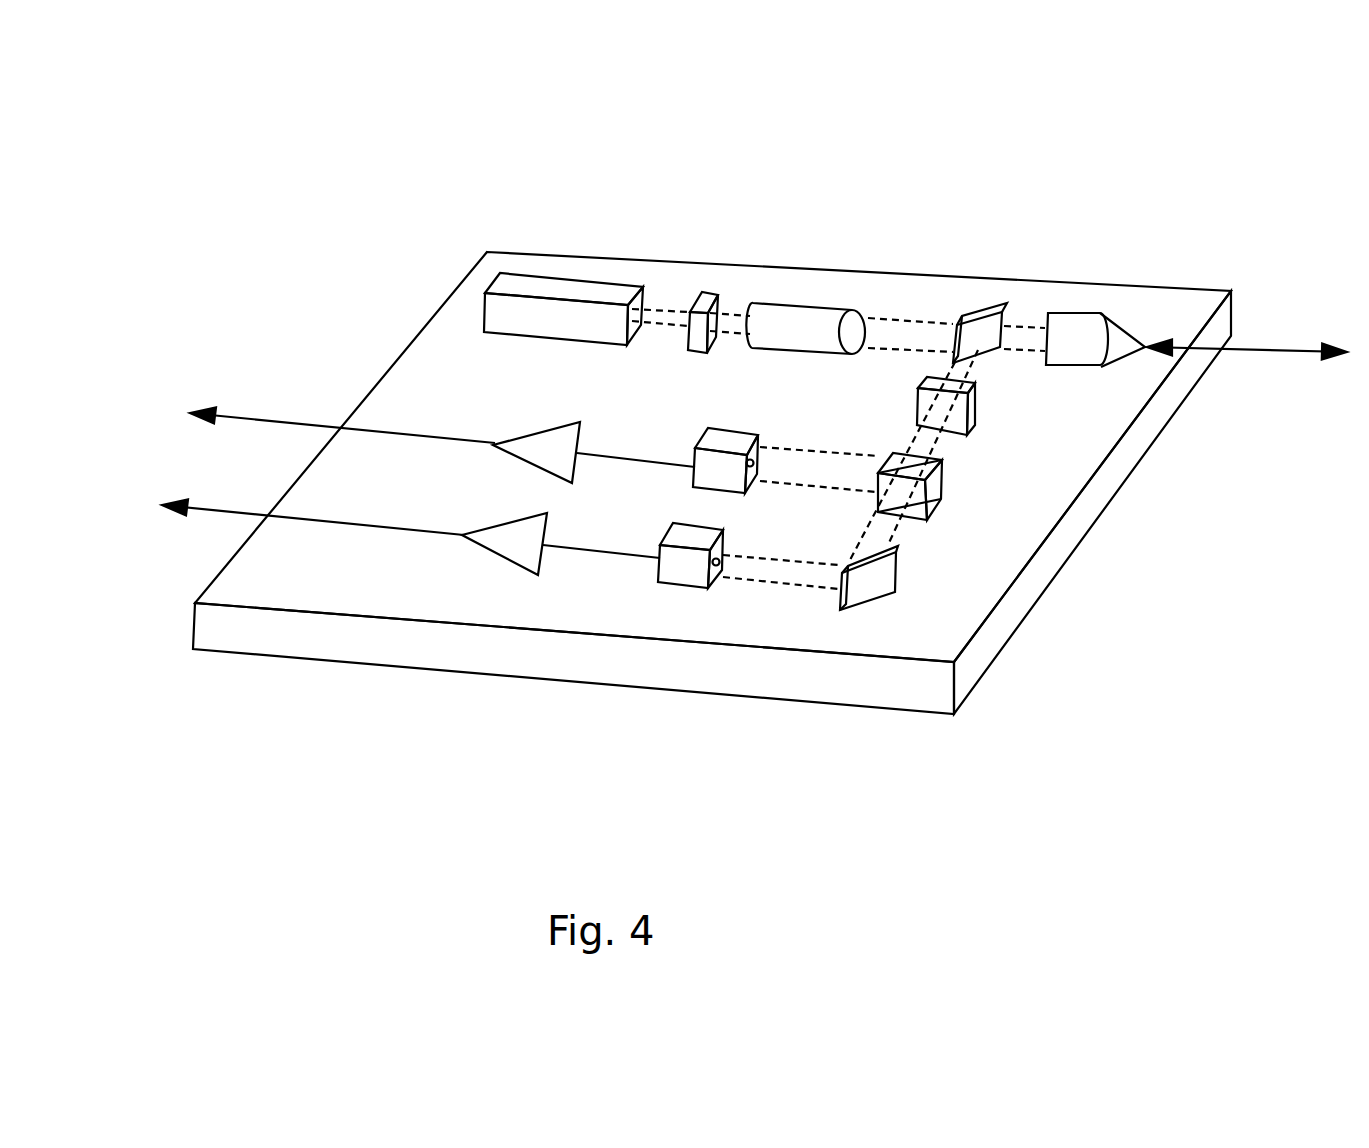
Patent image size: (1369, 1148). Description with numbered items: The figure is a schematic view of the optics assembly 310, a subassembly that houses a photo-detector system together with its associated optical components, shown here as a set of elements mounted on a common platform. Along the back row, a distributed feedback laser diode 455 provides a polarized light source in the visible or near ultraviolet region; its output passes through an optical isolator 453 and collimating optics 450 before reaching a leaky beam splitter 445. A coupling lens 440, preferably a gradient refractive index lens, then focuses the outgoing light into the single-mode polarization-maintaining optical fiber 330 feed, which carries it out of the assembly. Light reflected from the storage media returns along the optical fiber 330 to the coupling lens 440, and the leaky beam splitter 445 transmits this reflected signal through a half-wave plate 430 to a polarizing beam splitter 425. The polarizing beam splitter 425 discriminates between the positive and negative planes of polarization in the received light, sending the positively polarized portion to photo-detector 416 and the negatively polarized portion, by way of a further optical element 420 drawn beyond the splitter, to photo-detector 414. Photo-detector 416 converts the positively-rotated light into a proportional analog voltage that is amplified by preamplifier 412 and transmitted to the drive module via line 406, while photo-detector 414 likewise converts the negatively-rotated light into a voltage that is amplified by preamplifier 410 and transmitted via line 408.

The optics assembly 310 is at (355, 150).
The single-mode polarization-maintaining optical fiber 330 is at (1249, 353).
The line 406 is at (295, 427).
The line 408 is at (237, 513).
The preamplifier 410 is at (492, 555).
The preamplifier 412 is at (533, 435).
The photo-detector 414 is at (673, 587).
The photo-detector 416 is at (700, 433).
The mirror 420 is at (897, 577).
The polarizing beam splitter 425 is at (943, 485).
The half-wave plate 430 is at (977, 407).
The coupling lens 440 is at (1087, 313).
The leaky beam splitter 445 is at (992, 302).
The collimating optics 450 is at (825, 305).
The optical isolator 453 is at (710, 293).
The laser diode 455 is at (595, 282).